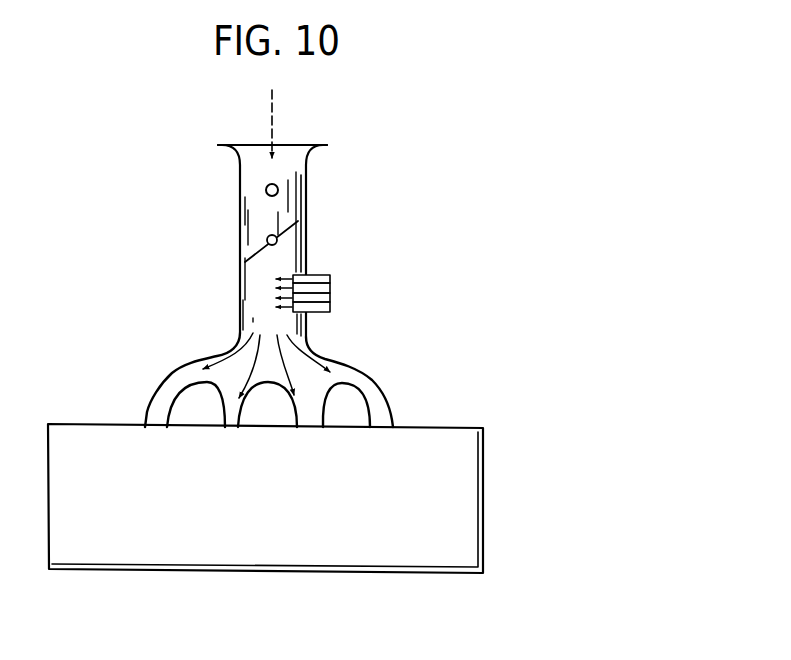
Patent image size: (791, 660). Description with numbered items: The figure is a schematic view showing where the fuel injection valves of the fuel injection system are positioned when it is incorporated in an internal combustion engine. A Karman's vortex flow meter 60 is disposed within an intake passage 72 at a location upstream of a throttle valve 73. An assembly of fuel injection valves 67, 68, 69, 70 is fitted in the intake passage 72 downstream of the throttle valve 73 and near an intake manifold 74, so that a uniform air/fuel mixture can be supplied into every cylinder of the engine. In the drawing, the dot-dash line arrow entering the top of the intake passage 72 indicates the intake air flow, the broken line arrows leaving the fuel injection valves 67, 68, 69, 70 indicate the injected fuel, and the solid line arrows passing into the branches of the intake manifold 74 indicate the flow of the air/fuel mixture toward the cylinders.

The Karman's vortex flow meter 60 is at (266, 191).
The intake passage 72 is at (307, 177).
The throttle valve 73 is at (298, 221).
The fuel injection valve 67 is at (330, 277).
The fuel injection valve 68 is at (330, 284).
The fuel injection valve 69 is at (330, 294).
The fuel injection valve 70 is at (330, 306).
The intake manifold 74 is at (372, 375).